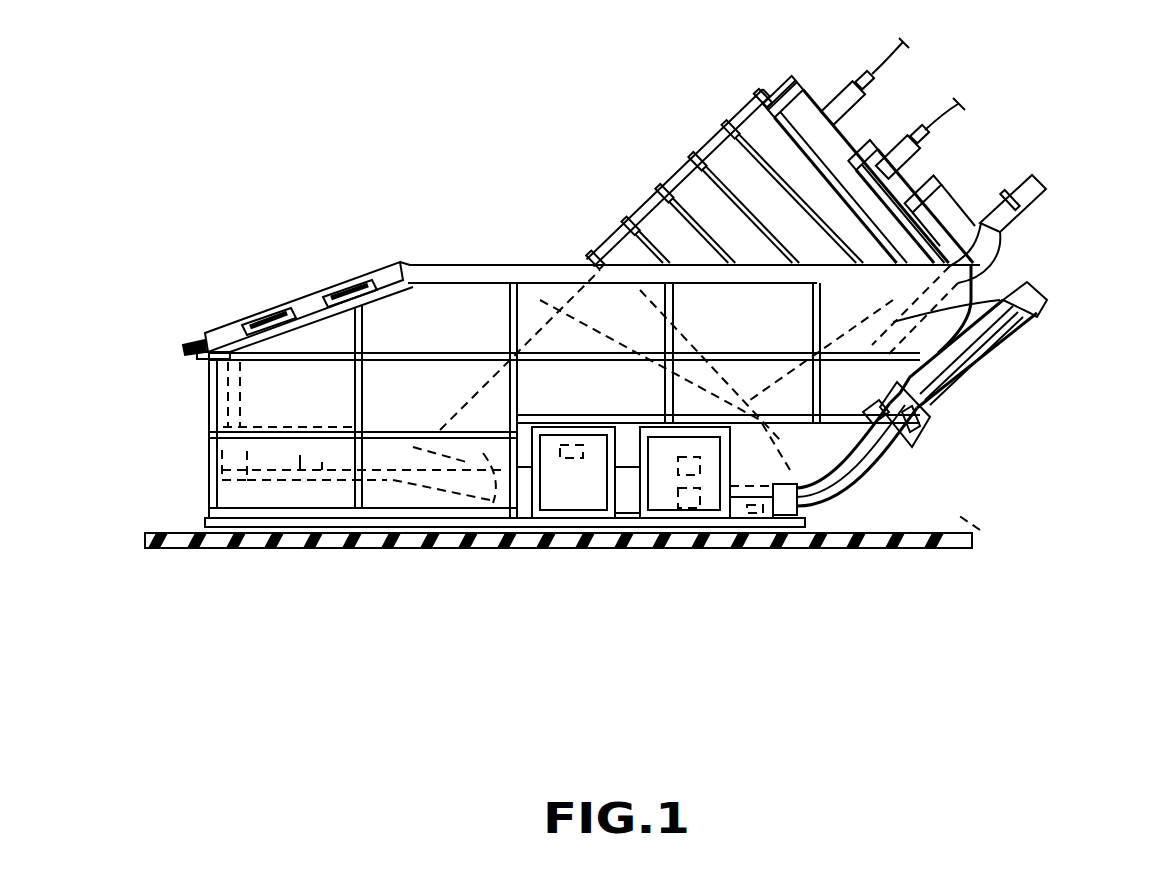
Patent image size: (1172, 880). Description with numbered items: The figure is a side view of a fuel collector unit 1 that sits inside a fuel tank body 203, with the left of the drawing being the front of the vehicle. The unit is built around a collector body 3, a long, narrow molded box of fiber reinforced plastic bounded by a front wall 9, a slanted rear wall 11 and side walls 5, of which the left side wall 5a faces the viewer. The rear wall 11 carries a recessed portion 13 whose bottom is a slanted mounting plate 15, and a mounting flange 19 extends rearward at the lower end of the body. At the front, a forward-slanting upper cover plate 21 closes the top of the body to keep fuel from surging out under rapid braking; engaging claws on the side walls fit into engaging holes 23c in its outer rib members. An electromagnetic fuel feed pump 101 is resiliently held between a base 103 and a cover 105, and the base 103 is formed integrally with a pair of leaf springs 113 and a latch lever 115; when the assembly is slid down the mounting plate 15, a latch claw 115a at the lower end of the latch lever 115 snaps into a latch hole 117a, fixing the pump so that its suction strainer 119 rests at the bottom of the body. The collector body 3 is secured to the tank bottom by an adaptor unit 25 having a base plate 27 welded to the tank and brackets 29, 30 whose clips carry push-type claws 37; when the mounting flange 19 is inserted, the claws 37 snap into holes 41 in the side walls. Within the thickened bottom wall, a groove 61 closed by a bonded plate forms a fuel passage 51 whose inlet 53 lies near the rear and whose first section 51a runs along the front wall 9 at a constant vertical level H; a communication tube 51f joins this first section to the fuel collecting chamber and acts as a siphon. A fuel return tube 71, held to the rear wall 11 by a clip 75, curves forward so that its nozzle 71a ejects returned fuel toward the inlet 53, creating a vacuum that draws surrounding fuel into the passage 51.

The fuel collector unit 1 is at (435, 255).
The collector body 3 is at (467, 303).
The side wall 5 is at (497, 303).
The left side wall 5a is at (213, 355).
The front wall 9 is at (205, 398).
The upper cover plate 21 is at (325, 287).
The engaging holes 23c is at (300, 303).
The communication tube 51f is at (230, 387).
The first section 51a is at (207, 483).
The fuel passage 51 is at (272, 455).
The groove 61 is at (300, 455).
The vertical level H is at (322, 465).
The suction strainer 119 is at (385, 480).
The bracket 29 is at (540, 480).
The push-type claw 37 is at (570, 458).
The holes 41 is at (573, 561).
The adaptor unit 25 is at (650, 485).
The bracket 30 is at (707, 480).
The inlet 53 is at (660, 478).
The nozzle 71a is at (690, 490).
The mounting flange 19 is at (750, 513).
The base plate 27 is at (790, 527).
The recessed portion 13 is at (823, 440).
The mounting plate 15 is at (975, 562).
The tank body 203 is at (960, 550).
The cover 105 is at (726, 124).
The electromagnetic fuel feed pump 101 is at (802, 108).
The base 103 is at (963, 200).
The latch lever 115 is at (1045, 190).
The leaf springs 113 is at (987, 252).
The latch claw 115a is at (1049, 302).
The rear wall 11 is at (990, 352).
The fuel return tube 71 is at (960, 395).
The clip 75 is at (882, 432).
The latch hole 117a is at (872, 322).